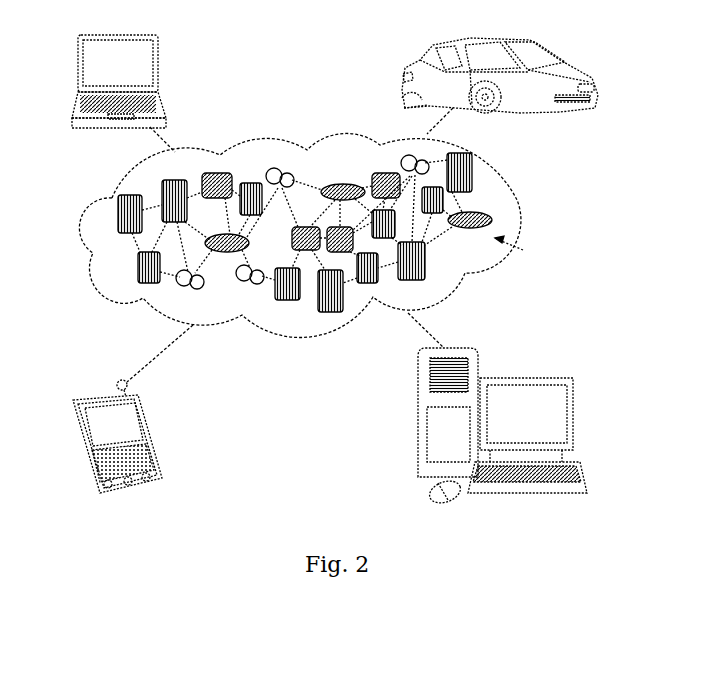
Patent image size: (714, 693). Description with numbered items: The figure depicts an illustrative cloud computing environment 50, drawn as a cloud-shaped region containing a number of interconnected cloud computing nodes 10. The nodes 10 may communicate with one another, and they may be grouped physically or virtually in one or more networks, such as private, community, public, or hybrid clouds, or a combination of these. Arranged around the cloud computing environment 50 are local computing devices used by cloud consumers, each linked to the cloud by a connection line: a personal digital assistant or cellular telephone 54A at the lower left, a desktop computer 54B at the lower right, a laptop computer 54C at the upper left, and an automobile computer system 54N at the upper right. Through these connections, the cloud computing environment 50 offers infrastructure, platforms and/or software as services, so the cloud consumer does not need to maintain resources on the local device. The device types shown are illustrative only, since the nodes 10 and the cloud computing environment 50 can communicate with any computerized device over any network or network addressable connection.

The cloud computing node 10 is at (523, 250).
The cloud computing environment 50 is at (521, 222).
The personal digital assistant or cellular telephone 54A is at (151, 430).
The desktop computer 54B is at (534, 366).
The laptop computer 54C is at (158, 67).
The automobile computer system 54N is at (405, 80).